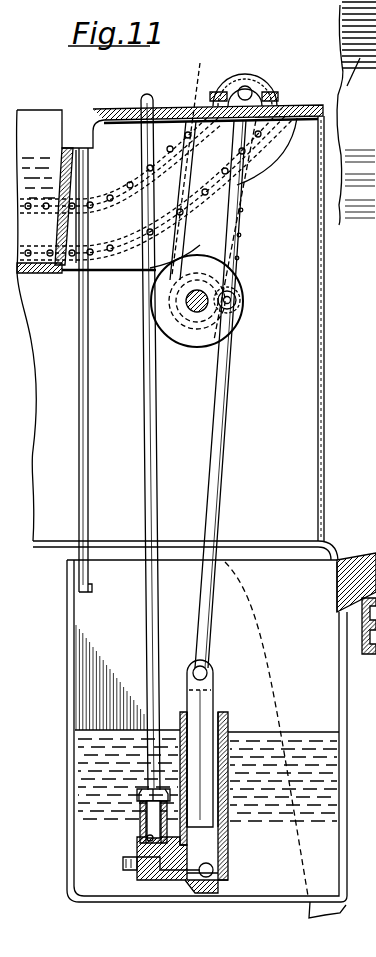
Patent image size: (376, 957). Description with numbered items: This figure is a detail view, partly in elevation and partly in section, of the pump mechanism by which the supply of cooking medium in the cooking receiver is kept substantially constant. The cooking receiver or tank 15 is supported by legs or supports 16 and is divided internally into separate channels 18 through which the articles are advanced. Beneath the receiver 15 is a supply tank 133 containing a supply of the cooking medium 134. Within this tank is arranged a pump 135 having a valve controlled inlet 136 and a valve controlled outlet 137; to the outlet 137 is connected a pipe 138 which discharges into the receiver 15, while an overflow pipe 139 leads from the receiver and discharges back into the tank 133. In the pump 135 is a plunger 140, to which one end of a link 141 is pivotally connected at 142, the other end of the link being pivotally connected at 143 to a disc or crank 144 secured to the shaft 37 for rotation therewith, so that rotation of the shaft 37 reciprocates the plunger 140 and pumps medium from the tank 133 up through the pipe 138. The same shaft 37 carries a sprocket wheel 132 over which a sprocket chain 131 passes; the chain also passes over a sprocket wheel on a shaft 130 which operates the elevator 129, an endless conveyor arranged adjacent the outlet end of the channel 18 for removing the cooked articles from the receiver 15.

The cooking receiver or tank 15 is at (49, 118).
The legs or supports 16 is at (342, 548).
The channels 18 is at (356, 113).
The shaft 37 is at (186, 310).
The elevator 129 is at (172, 66).
The shaft 130 is at (247, 91).
The sprocket chain 131 is at (245, 212).
The sprocket wheel 132 is at (247, 249).
The supply tank 133 is at (68, 708).
The cooking medium 134 is at (84, 748).
The pump 135 is at (226, 712).
The valve controlled inlet 136 is at (230, 882).
The valve controlled outlet 137 is at (135, 838).
The pipe 138 is at (116, 80).
The overflow pipe 139 is at (89, 406).
The plunger 140 is at (210, 672).
The link 141 is at (220, 508).
The pivotal connection 142 is at (194, 672).
The pivotal connection 143 is at (238, 297).
The disc or crank 144 is at (196, 340).